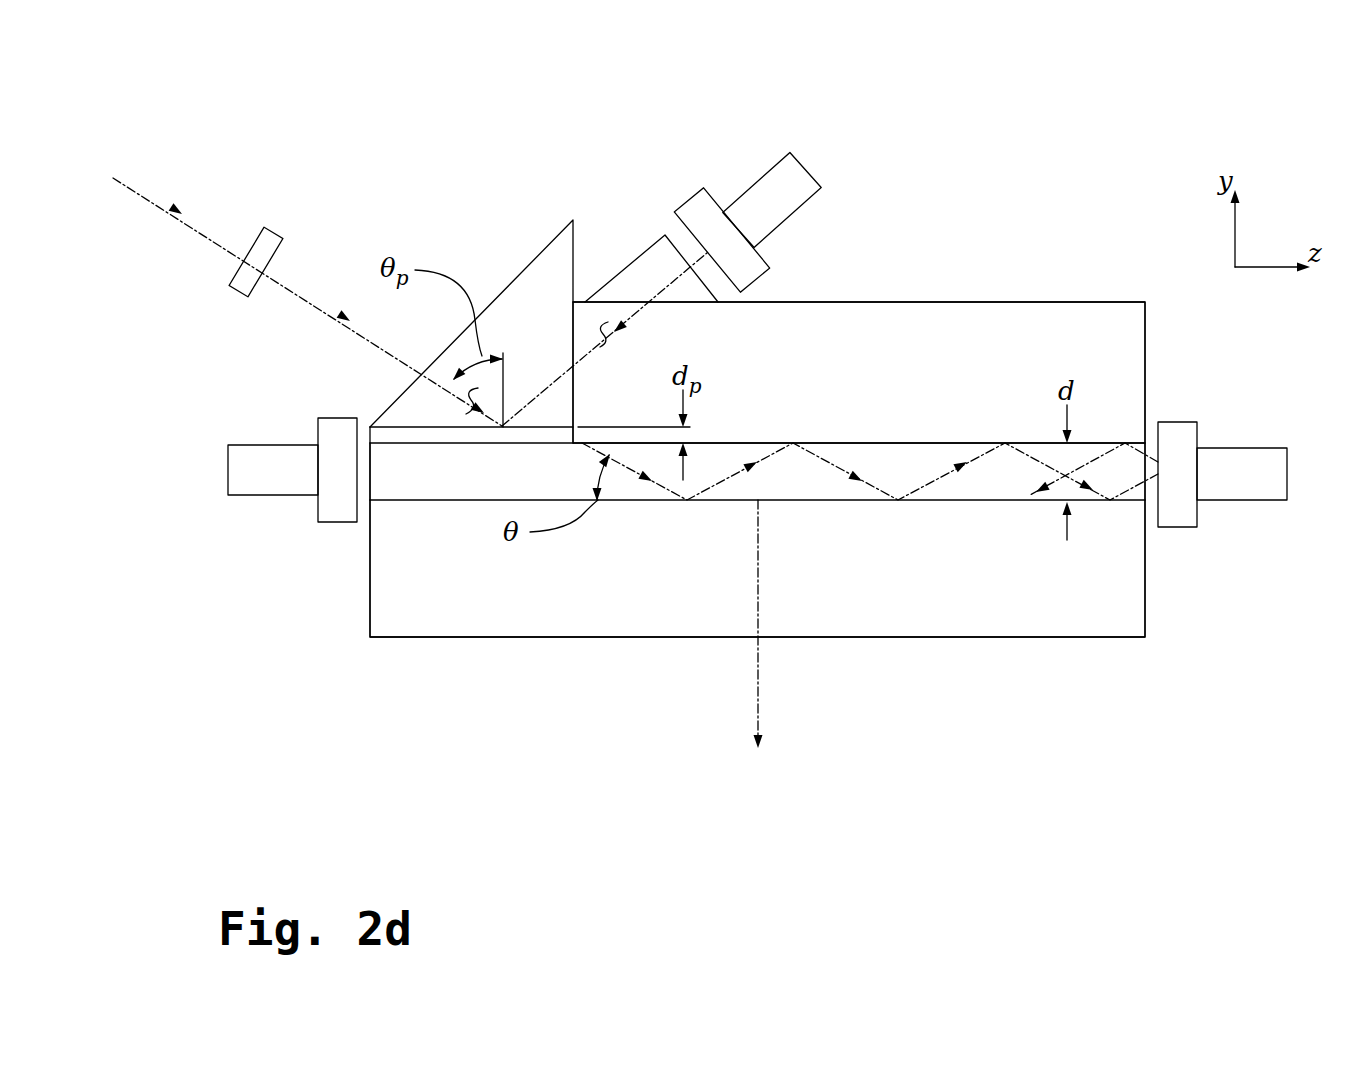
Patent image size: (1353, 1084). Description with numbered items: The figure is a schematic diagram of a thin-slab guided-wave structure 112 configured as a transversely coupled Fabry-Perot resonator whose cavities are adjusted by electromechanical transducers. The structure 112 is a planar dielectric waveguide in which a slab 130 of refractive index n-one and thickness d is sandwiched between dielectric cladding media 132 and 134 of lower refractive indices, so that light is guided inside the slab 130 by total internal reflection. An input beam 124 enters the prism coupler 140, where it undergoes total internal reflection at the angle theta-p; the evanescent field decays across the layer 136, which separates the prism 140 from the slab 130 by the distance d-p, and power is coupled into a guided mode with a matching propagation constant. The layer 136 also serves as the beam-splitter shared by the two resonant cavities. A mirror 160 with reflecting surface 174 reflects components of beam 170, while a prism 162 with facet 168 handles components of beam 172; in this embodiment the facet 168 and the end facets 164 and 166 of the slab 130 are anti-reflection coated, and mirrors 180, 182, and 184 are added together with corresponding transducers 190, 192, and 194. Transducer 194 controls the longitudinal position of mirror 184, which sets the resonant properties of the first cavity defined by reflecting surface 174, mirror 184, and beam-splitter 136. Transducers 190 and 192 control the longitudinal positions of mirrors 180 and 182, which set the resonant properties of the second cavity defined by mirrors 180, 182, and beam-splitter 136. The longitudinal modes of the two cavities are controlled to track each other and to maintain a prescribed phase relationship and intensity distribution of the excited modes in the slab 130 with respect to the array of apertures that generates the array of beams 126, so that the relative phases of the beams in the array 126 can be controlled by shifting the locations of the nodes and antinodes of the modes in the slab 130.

The thin-slab guided-wave structure 112 is at (592, 755).
The input beam 124 is at (160, 205).
The array of beams 126 is at (758, 713).
The slab 130 is at (420, 477).
The dielectric cladding medium 132 is at (883, 598).
The dielectric cladding medium 134 is at (883, 350).
The layer 136 is at (402, 433).
The prism coupler 140 is at (551, 283).
The mirror 160 is at (274, 238).
The prism 162 is at (651, 275).
The end facet 164 is at (367, 490).
The end facet 166 is at (1147, 493).
The facet 168 is at (676, 243).
The beam 170 is at (470, 405).
The beam 172 is at (612, 340).
The reflecting surface 174 is at (284, 248).
The mirror 180 is at (1178, 422).
The mirror 182 is at (318, 505).
The mirror 184 is at (722, 208).
The transducer 190 is at (1222, 448).
The transducer 192 is at (228, 462).
The transducer 194 is at (790, 222).